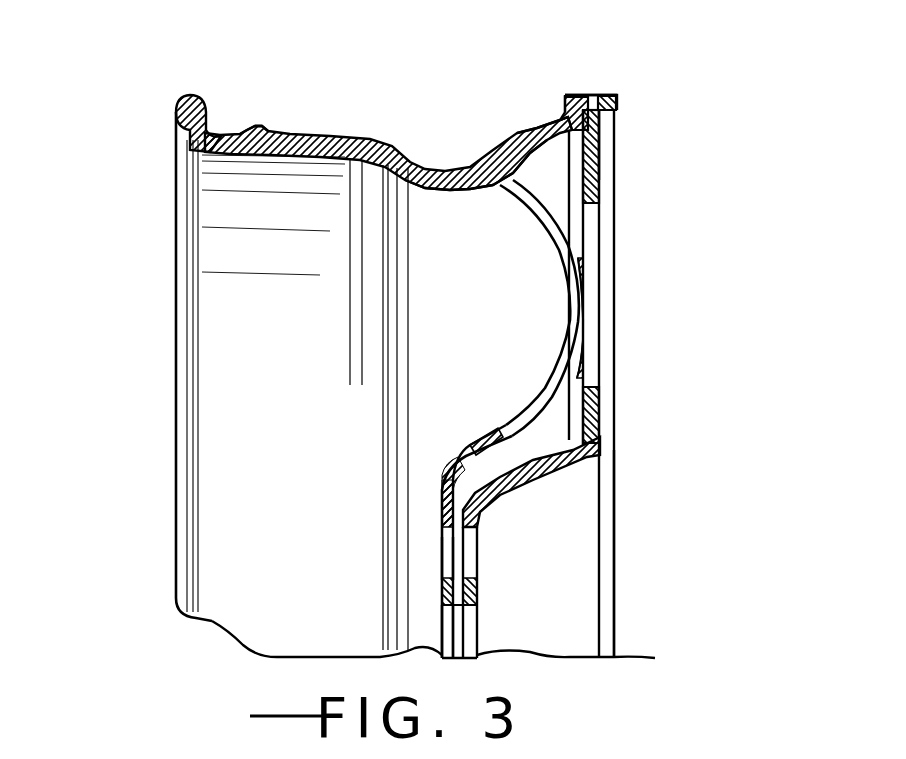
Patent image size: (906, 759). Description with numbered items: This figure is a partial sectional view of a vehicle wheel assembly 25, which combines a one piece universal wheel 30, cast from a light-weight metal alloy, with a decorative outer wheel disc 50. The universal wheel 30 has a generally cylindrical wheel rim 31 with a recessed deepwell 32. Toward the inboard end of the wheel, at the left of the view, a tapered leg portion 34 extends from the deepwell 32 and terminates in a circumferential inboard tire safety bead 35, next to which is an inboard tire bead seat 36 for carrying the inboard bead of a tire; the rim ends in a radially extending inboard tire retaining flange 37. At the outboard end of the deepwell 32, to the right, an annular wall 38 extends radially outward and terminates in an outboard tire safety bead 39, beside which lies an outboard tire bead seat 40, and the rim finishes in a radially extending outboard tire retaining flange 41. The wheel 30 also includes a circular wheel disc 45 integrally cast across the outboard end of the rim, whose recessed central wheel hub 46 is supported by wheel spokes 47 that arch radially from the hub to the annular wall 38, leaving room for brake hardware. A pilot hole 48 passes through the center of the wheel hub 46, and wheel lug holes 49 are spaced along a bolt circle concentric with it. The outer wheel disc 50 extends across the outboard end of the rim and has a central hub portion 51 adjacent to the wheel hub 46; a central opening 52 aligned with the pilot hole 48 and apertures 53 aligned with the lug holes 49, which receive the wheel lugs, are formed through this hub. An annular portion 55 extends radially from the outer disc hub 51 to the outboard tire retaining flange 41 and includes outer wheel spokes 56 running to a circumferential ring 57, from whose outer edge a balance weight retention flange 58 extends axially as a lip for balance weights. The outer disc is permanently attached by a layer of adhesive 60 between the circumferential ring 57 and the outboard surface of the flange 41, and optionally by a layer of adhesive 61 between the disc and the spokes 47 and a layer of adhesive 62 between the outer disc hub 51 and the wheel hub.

The vehicle wheel assembly 25 is at (712, 347).
The universal wheel 30 is at (373, 112).
The wheel rim 31 is at (272, 380).
The deepwell 32 is at (438, 170).
The tapered leg portion 34 is at (300, 137).
The inboard tire safety bead 35 is at (262, 126).
The inboard tire bead seat 36 is at (232, 133).
The inboard tire retaining flange 37 is at (180, 100).
The annular wall 38 is at (497, 158).
The outboard tire safety bead 39 is at (518, 130).
The outboard tire bead seat 40 is at (541, 130).
The outboard tire retaining flange 41 is at (572, 97).
The wheel disc 45 is at (430, 458).
The wheel hub 46 is at (460, 450).
The wheel spokes 47 is at (547, 397).
The pilot hole 48 is at (422, 621).
The wheel lug holes 49 is at (422, 555).
The outer wheel disc 50 is at (612, 251).
The outer wheel disc hub 51 is at (482, 520).
The central opening 52 is at (487, 620).
The apertures 53 is at (492, 555).
The annular portion 55 is at (603, 375).
The outer wheel spokes 56 is at (595, 287).
The circumferential ring 57 is at (603, 182).
The balance weight retention flange 58 is at (614, 94).
The layer of adhesive 60 is at (603, 113).
The layer of adhesive 61 is at (585, 328).
The layer of adhesive 62 is at (443, 517).